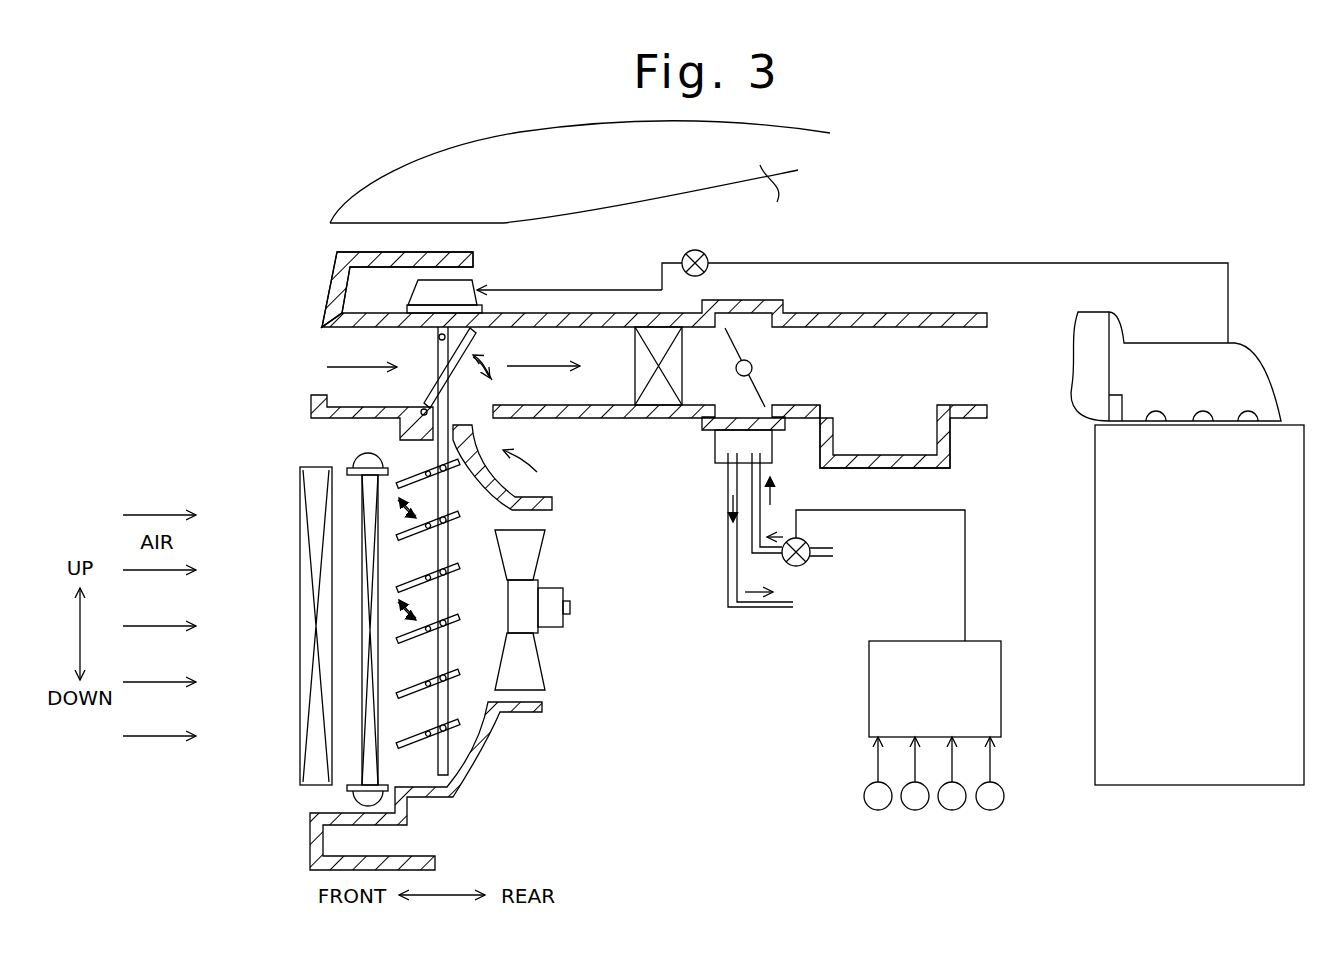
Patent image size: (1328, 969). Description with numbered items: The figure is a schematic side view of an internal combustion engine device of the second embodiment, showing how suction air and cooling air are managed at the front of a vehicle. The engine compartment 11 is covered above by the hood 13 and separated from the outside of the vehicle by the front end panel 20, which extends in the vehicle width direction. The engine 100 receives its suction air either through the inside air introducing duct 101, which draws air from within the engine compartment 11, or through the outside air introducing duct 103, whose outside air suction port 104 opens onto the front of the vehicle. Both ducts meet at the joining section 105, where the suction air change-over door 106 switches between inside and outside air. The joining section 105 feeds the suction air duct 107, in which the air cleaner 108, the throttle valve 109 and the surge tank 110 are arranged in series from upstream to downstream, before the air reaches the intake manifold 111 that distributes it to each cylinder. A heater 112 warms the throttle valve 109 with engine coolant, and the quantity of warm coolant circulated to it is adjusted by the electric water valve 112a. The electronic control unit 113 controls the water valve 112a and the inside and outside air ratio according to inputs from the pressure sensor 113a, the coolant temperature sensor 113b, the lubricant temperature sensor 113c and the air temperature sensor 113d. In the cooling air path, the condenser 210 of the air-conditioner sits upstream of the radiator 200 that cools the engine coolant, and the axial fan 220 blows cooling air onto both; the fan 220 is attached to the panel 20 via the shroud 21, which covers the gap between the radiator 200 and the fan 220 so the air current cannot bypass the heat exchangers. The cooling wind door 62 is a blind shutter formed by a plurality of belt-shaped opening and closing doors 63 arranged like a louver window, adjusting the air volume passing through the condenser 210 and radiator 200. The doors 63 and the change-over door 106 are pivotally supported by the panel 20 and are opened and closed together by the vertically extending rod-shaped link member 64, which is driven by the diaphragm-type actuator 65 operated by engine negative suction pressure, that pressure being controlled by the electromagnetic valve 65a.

The engine compartment 11 is at (620, 210).
The hood 13 is at (776, 200).
The front end panel 20 is at (323, 282).
The actuator 65 is at (463, 288).
The electromagnetic valve 65a is at (696, 250).
The suction air duct 107 is at (563, 312).
The throttle valve 109 is at (757, 335).
The suction air change-over door 106 is at (447, 348).
The outside air suction port 104 is at (345, 385).
The outside air introducing duct 103 is at (345, 418).
The joining section 105 is at (483, 420).
The air cleaner 108 is at (662, 392).
The surge tank 110 is at (903, 425).
The intake manifold 111 is at (1251, 377).
The heater 112 is at (723, 458).
The electric type water valve 112a is at (808, 563).
The radiator 200 is at (357, 540).
The condenser 210 is at (300, 586).
The cooling wind door 62 is at (405, 665).
The link member 64 is at (443, 710).
The opening and closing door 63 is at (450, 475).
The axial fan 220 is at (528, 552).
The inside air introducing duct 101 is at (547, 488).
The shroud 21 is at (493, 737).
The electronic control unit 113 is at (1001, 697).
The pressure sensor 113a is at (878, 810).
The coolant temperature sensor 113b is at (915, 810).
The lubricant temperature sensor 113c is at (952, 810).
The air temperature sensor 113d is at (990, 810).
The engine 100 is at (1212, 768).